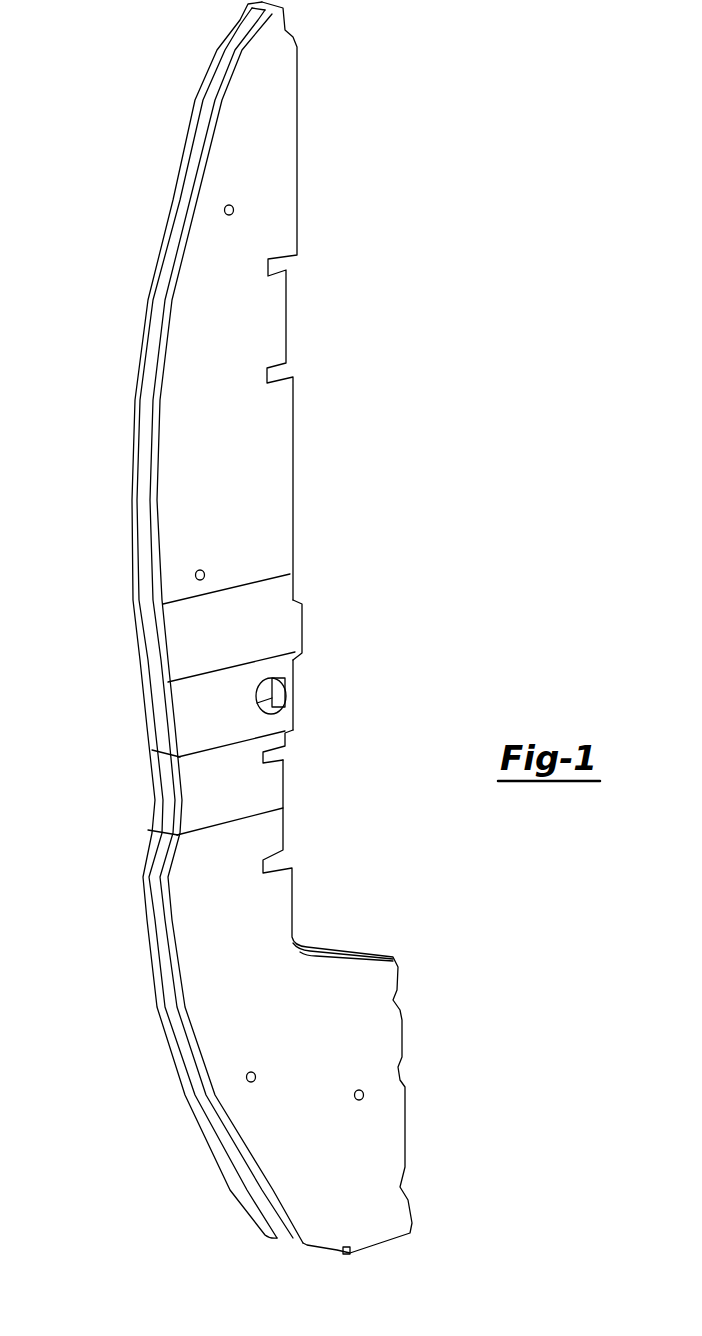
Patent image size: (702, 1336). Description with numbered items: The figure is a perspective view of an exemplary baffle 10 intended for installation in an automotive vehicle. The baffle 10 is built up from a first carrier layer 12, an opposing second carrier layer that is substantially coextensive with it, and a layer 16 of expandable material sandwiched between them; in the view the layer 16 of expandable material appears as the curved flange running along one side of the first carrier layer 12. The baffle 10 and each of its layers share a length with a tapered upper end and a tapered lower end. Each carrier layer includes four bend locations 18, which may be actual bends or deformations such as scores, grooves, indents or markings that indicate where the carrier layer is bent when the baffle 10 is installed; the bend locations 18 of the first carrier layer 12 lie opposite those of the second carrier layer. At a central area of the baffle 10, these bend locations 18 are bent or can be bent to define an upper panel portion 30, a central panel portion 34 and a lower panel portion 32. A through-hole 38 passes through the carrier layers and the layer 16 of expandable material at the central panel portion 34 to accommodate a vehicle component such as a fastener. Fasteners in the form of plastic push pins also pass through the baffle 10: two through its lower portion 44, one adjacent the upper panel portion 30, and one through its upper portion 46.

The baffle 10 is at (360, 378).
The first carrier layer 12 is at (273, 518).
The layer of expandable material 16 is at (142, 502).
The bend locations 18 is at (276, 650).
The upper panel portion 30 is at (184, 637).
The lower panel portion 32 is at (205, 787).
The central panel portion 34 is at (197, 720).
The through-hole 38 is at (288, 694).
The lower portion 44 is at (218, 1013).
The upper portion 46 is at (212, 236).